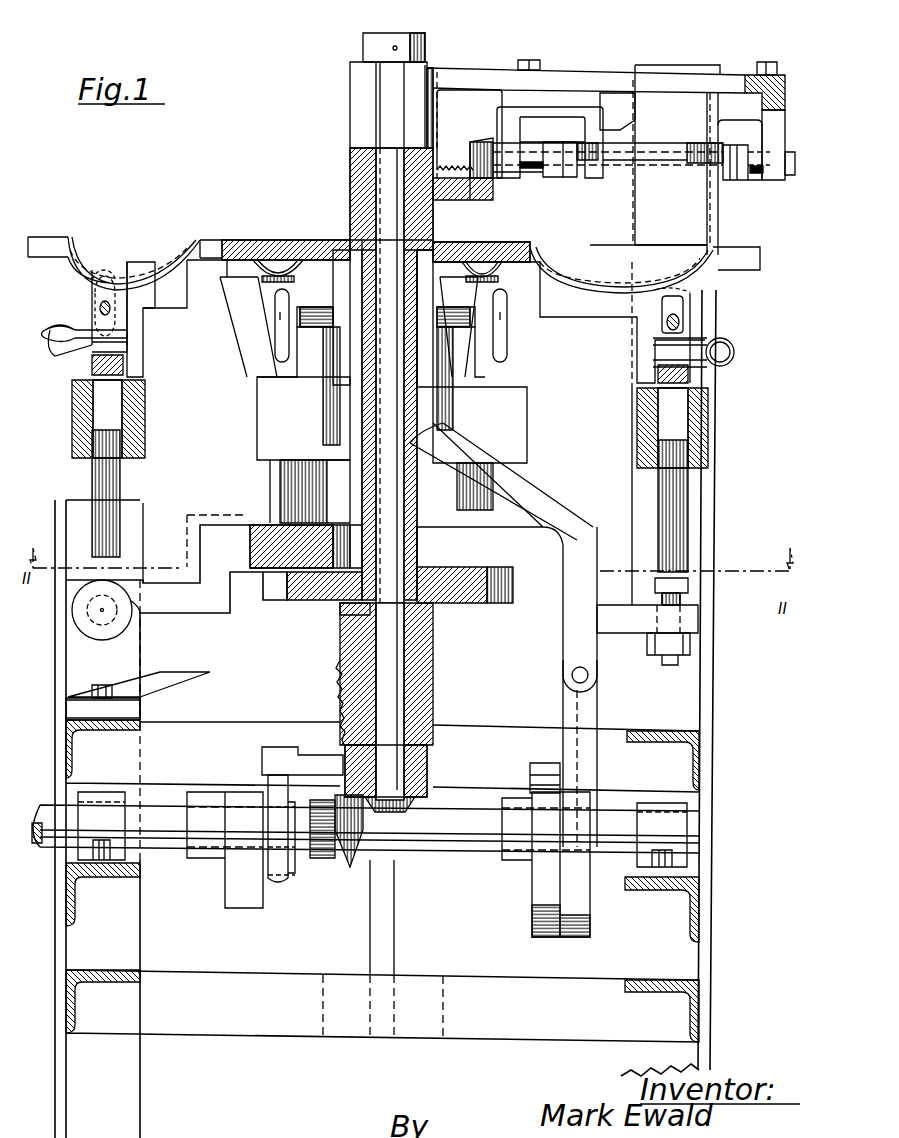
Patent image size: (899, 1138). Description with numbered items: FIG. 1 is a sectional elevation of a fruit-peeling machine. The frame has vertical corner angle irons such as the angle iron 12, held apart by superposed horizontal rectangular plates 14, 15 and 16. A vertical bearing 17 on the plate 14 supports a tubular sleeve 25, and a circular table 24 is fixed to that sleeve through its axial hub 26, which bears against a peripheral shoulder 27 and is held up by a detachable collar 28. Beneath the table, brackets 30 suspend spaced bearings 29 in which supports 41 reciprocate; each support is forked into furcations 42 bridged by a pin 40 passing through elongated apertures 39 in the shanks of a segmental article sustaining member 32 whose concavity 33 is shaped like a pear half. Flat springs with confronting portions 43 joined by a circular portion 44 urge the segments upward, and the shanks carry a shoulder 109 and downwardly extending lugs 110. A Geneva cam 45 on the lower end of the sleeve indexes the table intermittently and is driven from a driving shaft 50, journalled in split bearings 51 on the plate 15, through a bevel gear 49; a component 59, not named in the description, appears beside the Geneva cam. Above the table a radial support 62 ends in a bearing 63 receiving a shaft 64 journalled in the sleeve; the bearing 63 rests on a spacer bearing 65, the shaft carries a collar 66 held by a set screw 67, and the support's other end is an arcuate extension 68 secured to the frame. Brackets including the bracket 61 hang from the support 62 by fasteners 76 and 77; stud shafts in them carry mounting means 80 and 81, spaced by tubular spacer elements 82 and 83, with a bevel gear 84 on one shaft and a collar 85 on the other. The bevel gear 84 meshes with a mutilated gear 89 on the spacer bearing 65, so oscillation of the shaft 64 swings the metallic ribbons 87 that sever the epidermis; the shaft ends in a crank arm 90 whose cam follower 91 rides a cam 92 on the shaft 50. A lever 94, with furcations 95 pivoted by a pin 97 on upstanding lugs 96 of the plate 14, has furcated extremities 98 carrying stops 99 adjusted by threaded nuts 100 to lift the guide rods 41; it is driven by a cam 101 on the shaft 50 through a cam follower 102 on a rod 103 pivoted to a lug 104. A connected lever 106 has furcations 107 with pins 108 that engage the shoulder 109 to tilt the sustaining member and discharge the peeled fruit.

The angle iron 12 is at (712, 712).
The rectangular plate 14 is at (700, 748).
The rectangular plate 15 is at (700, 893).
The rectangular plate 16 is at (700, 999).
The bearing 17 is at (348, 640).
The table 24 is at (242, 240).
The tubular sleeve 25 is at (368, 256).
The hub 26 is at (345, 357).
The peripheral shoulder 27 is at (433, 236).
The collar 28 is at (440, 380).
The bearing 29 is at (143, 428).
The bracket 30 is at (243, 320).
The article sustaining member 32 is at (46, 220).
The concavity 33 is at (150, 268).
The elongated aperture 39 is at (95, 305).
The pin 40 is at (98, 312).
The support 41 is at (118, 482).
The furcation 42 is at (275, 303).
The confronting portion 43 is at (90, 352).
The circular portion 44 is at (55, 350).
The Geneva cam 45 is at (465, 603).
The bevel gear 49 is at (352, 872).
The driving shaft 50 is at (155, 845).
The split bearing 51 is at (78, 795).
The bearing 59 is at (512, 603).
The bracket 61 is at (578, 108).
The support 62 is at (466, 78).
The bearing 63 is at (360, 86).
The shaft 64 is at (388, 168).
The spacer bearing 65 is at (440, 200).
The collar 66 is at (368, 42).
The set screw 67 is at (397, 46).
The arcuate extension 68 is at (775, 96).
The fastener 76 is at (528, 60).
The fastener 77 is at (766, 62).
The mounting means 80 is at (570, 140).
The mounting means 81 is at (735, 150).
The tubular spacer element 82 is at (535, 168).
The tubular spacer element 83 is at (754, 172).
The bevel gear 84 is at (478, 140).
The collar 85 is at (792, 152).
The metallic ribbon 87 is at (628, 150).
The mutilated gear 89 is at (447, 170).
The crank arm 90 is at (425, 760).
The cam follower 91 is at (285, 880).
The cam 92 is at (300, 860).
The lever 94 is at (270, 540).
The furcation 95 is at (160, 615).
The upstanding lug 96 is at (78, 648).
The pin 97 is at (90, 620).
The furcated extremity 98 is at (607, 608).
The stop 99 is at (688, 596).
The threaded nut 100 is at (692, 650).
The cam 101 is at (535, 935).
The cam follower 102 is at (540, 770).
The rod 103 is at (572, 715).
The lug 104 is at (568, 655).
The lever 106 is at (520, 520).
The furcation 107 is at (330, 428).
The pin 108 is at (297, 345).
The shoulder 109 is at (168, 312).
The lug 110 is at (140, 348).